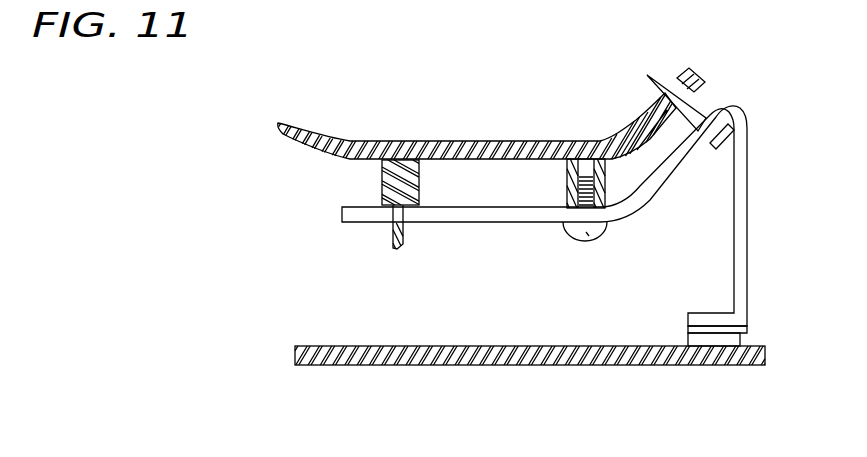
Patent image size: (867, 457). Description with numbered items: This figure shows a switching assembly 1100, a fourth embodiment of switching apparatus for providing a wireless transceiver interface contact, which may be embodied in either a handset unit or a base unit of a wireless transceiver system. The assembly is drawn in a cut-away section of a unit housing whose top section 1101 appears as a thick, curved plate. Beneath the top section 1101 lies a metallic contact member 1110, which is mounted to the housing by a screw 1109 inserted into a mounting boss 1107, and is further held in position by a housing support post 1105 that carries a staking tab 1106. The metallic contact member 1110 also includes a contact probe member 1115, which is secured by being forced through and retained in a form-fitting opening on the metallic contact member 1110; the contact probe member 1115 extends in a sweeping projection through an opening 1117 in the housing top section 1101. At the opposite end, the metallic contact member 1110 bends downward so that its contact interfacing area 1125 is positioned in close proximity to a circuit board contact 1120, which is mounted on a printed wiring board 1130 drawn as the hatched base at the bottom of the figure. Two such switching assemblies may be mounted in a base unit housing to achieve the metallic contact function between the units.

The switching assembly 1100 is at (149, 92).
The top section 1101 is at (401, 141).
The housing support post 1105 is at (420, 197).
The staking tab 1106 is at (396, 252).
The mounting boss 1107 is at (567, 179).
The screw 1109 is at (582, 234).
The metallic contact member 1110 is at (357, 207).
The contact probe member 1115 is at (657, 78).
The opening 1117 is at (657, 102).
The circuit board contact 1120 is at (700, 327).
The contact interfacing area 1125 is at (746, 328).
The printed wiring board 1130 is at (528, 366).